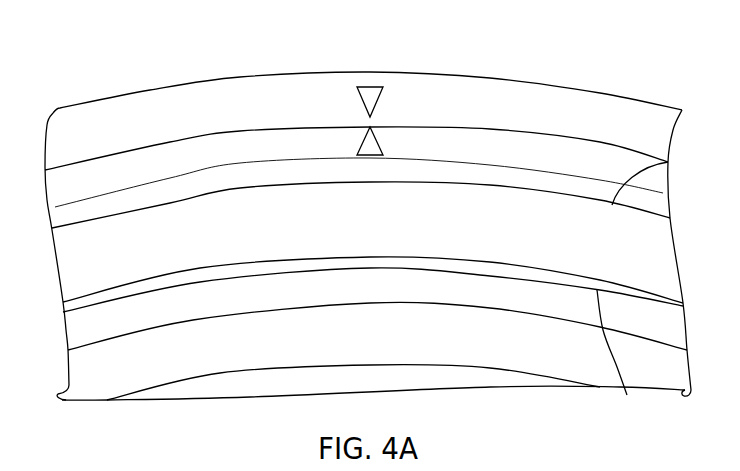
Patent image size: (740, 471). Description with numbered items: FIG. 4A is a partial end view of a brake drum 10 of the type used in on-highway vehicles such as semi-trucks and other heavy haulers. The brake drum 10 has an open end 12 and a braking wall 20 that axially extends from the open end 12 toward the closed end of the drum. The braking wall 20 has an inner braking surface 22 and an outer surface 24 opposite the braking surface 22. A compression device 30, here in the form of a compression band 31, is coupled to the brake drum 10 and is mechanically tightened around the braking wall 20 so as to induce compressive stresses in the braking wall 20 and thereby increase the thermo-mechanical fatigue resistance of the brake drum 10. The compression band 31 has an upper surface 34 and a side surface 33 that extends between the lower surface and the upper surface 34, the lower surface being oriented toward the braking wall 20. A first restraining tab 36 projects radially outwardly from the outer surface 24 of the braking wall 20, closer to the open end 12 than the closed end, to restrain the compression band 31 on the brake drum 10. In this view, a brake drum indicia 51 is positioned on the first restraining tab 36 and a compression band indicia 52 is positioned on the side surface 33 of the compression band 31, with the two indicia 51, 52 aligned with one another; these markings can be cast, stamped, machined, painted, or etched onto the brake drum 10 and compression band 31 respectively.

The brake drum 10 is at (618, 58).
The open end 12 is at (90, 70).
The braking wall 20 is at (662, 263).
The braking surface 22 is at (616, 356).
The outer surface 24 is at (670, 163).
The compression device 30 is at (457, 90).
The compression band 31 is at (163, 105).
The side surface 33 is at (527, 95).
The upper surface 34 is at (240, 78).
The first restraining tab 36 is at (62, 187).
The brake drum indicia 51 is at (373, 147).
The compression band indicia 52 is at (368, 92).